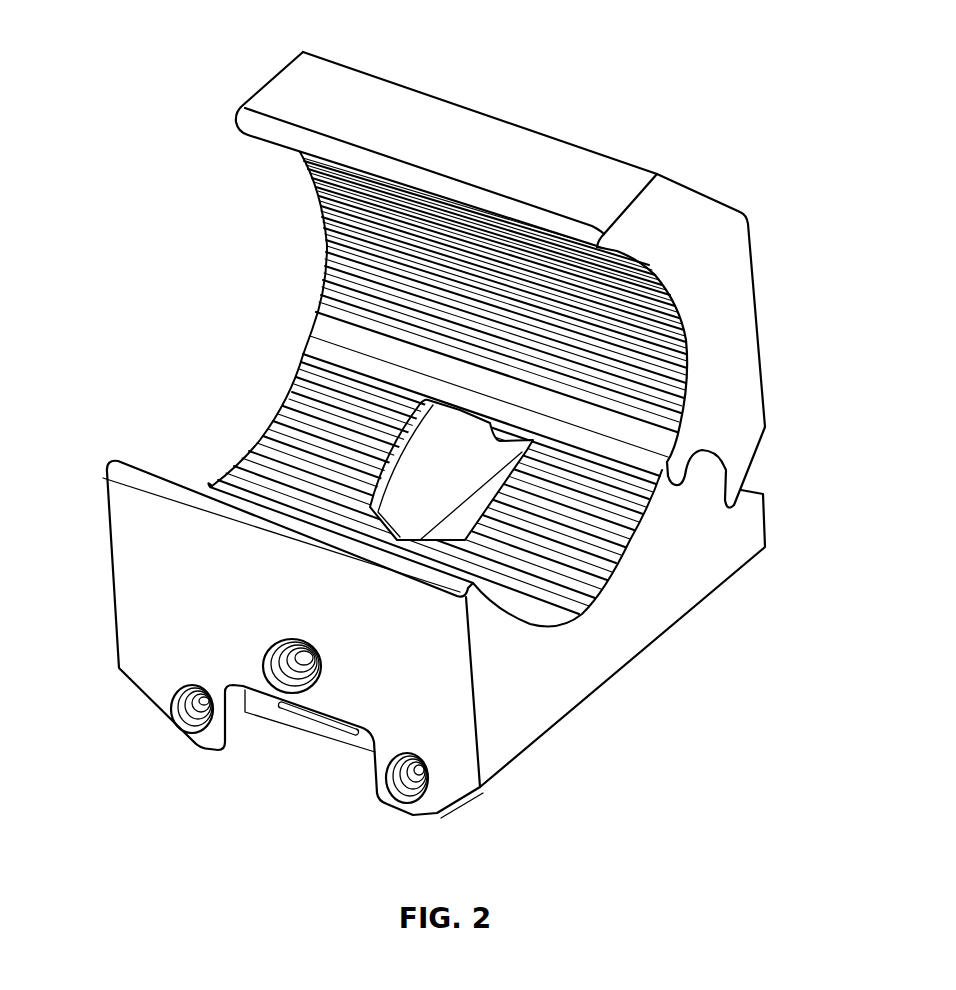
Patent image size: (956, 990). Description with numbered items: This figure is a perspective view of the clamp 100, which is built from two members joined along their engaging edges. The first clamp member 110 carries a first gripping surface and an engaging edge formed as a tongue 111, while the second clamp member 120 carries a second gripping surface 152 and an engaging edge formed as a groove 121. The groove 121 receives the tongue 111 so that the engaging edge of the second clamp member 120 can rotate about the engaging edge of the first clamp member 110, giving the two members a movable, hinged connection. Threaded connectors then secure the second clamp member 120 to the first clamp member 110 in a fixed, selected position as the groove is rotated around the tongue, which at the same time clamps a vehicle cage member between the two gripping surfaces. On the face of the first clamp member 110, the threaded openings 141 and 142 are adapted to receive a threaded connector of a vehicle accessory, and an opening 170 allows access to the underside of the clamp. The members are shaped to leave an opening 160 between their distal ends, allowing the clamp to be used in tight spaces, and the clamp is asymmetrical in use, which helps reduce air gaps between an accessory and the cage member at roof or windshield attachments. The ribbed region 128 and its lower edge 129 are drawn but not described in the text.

The clamp 100 is at (516, 80).
The first clamp member 110 is at (130, 566).
The tongue 111 is at (714, 461).
The second clamp member 120 is at (731, 322).
The groove 121 is at (724, 452).
The ribbed concave surface 128 is at (352, 160).
The lower edge of ribbed surface 129 is at (232, 503).
The threaded opening 141 is at (270, 648).
The threaded openings 142 is at (190, 736).
The second gripping surface 152 is at (347, 266).
The opening 160 is at (196, 294).
The opening 170 is at (440, 456).